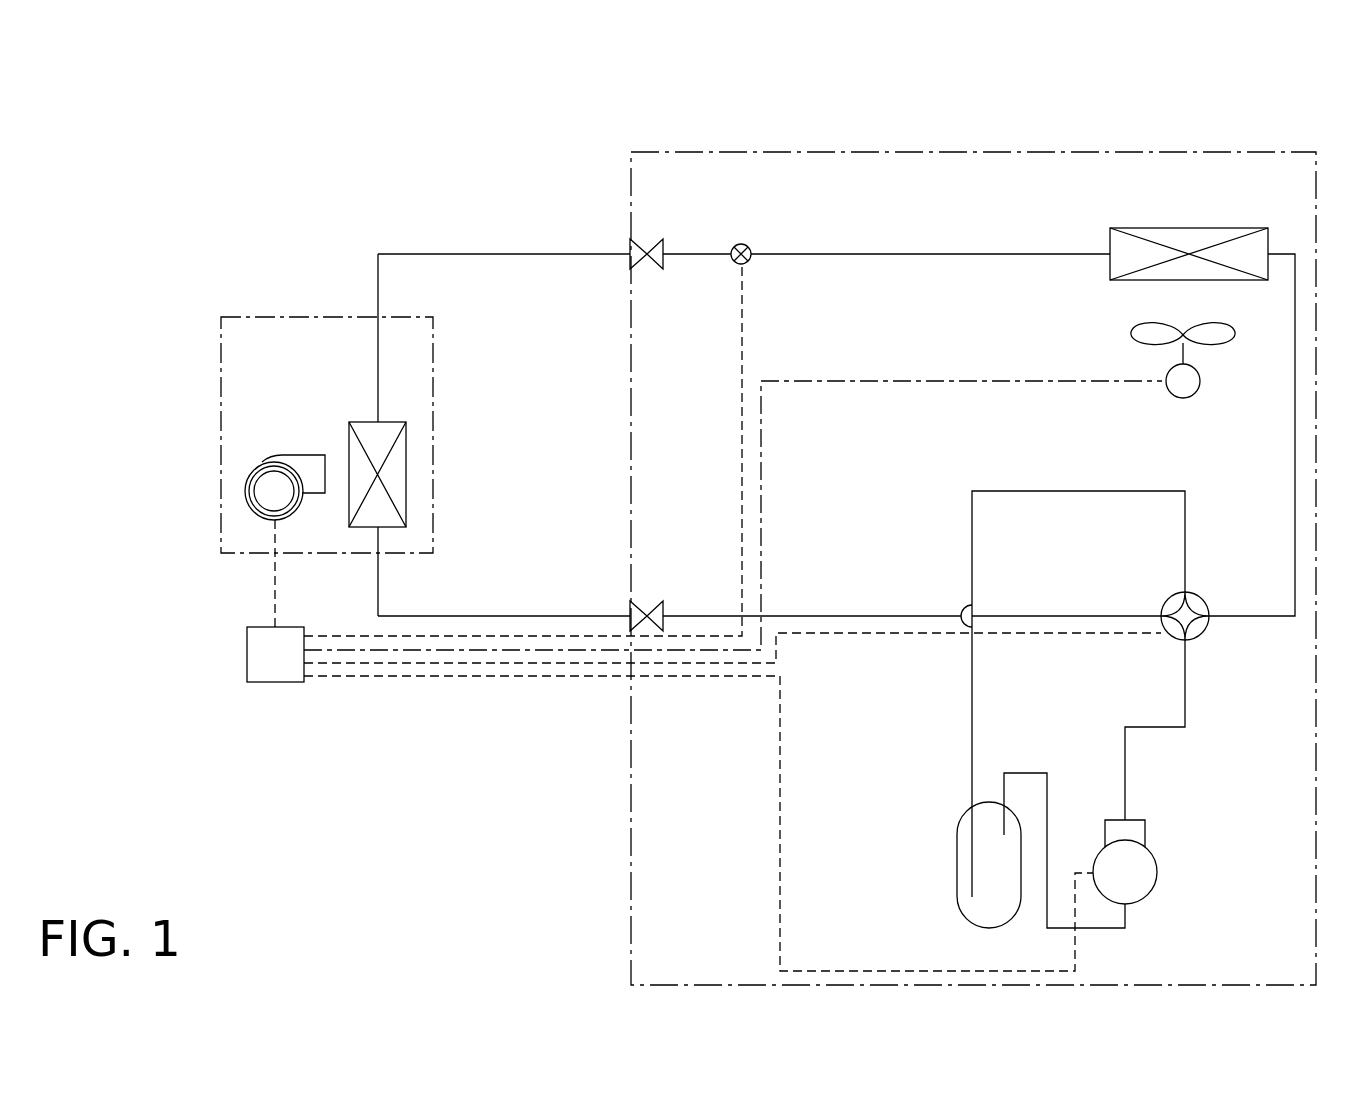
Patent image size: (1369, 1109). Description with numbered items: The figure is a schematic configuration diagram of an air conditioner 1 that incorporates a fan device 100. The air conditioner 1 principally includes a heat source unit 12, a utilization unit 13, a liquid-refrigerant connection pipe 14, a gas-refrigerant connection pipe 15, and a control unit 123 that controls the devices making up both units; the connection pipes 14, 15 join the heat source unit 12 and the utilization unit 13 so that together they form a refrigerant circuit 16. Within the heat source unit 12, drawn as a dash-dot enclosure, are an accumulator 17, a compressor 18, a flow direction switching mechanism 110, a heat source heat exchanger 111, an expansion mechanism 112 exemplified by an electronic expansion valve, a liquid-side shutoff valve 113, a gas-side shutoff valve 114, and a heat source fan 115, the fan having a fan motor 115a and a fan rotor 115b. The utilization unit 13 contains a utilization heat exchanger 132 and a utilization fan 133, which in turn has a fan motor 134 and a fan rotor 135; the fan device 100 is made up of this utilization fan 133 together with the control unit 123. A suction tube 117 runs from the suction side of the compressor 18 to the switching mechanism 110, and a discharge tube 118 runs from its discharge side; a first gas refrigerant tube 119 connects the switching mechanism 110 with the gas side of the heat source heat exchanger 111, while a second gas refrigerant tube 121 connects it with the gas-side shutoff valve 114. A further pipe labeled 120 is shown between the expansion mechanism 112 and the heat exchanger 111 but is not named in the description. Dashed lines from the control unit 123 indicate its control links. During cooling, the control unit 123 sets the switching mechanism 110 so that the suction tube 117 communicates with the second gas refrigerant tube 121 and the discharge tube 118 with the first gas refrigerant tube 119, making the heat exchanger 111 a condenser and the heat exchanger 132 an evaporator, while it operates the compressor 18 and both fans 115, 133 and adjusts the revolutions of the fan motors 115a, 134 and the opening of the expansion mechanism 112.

The air conditioner 1 is at (1306, 140).
The heat source unit 12 is at (1237, 152).
The utilization unit 13 is at (433, 318).
The liquid-refrigerant connection pipe 14 is at (477, 252).
The gas-refrigerant connection pipe 15 is at (478, 614).
The refrigerant circuit 16 is at (545, 232).
The accumulator 17 is at (957, 860).
The compressor 18 is at (1108, 820).
The fan device 100 is at (146, 543).
The flow direction switching mechanism 110 is at (1206, 599).
The heat source heat exchanger 111 is at (1190, 228).
The expansion mechanism 112 is at (741, 243).
The liquid-side shutoff valve 113 is at (652, 268).
The gas-side shutoff valve 114 is at (648, 600).
The heat source fan 115 is at (1090, 327).
The fan motor 115a is at (1135, 337).
The fan rotor 115b is at (1167, 390).
The suction tube 117 is at (972, 722).
The discharge tube 118 is at (1185, 672).
The first gas refrigerant tube 119 is at (1295, 470).
The liquid pipe 120 is at (840, 256).
The second gas refrigerant tube 121 is at (918, 614).
The control unit 123 is at (247, 632).
The utilization heat exchanger 132 is at (407, 472).
The utilization fan 133 is at (250, 515).
The fan motor 134 is at (258, 490).
The fan rotor 135 is at (262, 466).